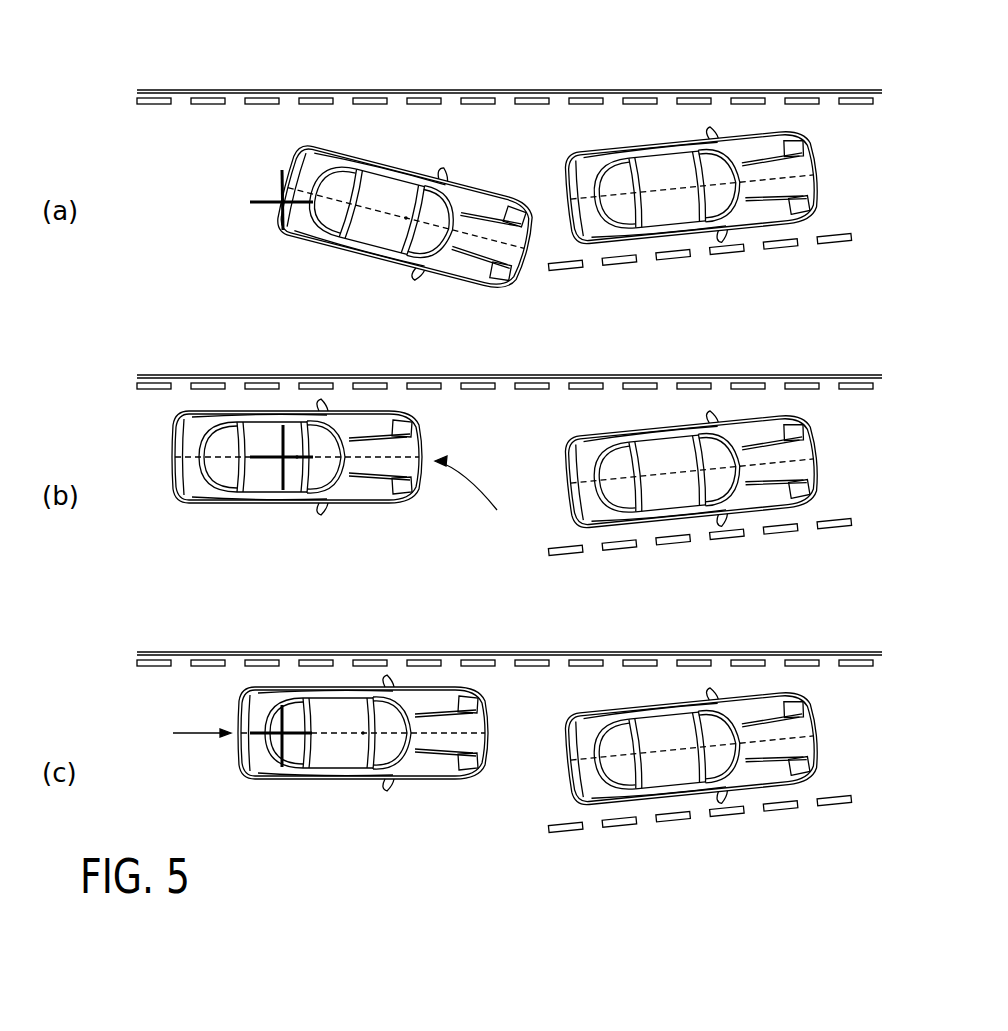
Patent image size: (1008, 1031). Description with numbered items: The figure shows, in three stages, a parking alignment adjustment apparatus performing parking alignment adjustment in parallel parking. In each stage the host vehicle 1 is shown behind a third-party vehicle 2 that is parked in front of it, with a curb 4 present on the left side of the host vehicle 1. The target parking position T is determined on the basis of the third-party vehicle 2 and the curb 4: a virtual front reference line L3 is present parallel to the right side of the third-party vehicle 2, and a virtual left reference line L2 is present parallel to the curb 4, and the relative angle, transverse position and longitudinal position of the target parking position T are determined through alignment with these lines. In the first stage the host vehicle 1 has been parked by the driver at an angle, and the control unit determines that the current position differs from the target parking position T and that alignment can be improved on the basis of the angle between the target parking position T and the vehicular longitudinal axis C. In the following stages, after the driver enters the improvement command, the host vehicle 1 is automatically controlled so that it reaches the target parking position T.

The host vehicle 1 is at (457, 268).
The third-party vehicle 2 is at (778, 145).
The curb 4 is at (618, 90).
The virtual left reference line L2 is at (148, 105).
The virtual front reference line L3 is at (785, 249).
The target parking position T is at (265, 208).
The vehicular longitudinal axis C is at (362, 214).